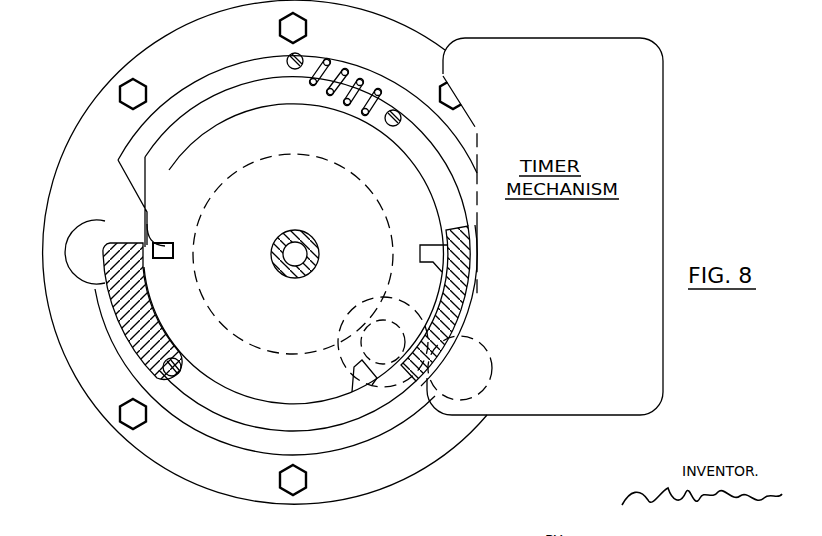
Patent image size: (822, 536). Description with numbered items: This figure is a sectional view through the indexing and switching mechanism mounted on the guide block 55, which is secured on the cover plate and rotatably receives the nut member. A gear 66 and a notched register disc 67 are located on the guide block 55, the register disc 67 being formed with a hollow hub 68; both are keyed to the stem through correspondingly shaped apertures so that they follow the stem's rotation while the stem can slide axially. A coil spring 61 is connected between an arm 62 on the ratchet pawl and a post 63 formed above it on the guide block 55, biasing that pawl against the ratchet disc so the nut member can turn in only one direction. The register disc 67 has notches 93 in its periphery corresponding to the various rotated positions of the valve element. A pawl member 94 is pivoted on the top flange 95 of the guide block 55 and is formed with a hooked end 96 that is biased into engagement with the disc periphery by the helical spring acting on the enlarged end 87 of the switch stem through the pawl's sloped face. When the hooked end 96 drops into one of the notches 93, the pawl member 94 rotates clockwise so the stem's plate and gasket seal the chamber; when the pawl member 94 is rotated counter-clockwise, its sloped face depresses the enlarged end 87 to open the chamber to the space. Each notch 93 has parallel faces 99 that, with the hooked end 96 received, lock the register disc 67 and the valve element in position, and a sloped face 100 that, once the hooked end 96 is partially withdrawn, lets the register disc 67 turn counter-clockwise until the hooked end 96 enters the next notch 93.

The guide block 55 is at (203, 100).
The coil spring 61 is at (335, 78).
The arm 62 is at (288, 56).
The post 63 is at (391, 127).
The gear 66 is at (268, 160).
The notched register disc 67 is at (135, 139).
The hollow hub 68 is at (303, 245).
The enlarged end 87 is at (92, 222).
The notches 93 is at (430, 244).
The pawl member 94 is at (118, 319).
The top flange 95 is at (207, 393).
The hooked end 96 is at (170, 260).
The parallel faces 99 is at (165, 246).
The sloped face 100 is at (152, 243).